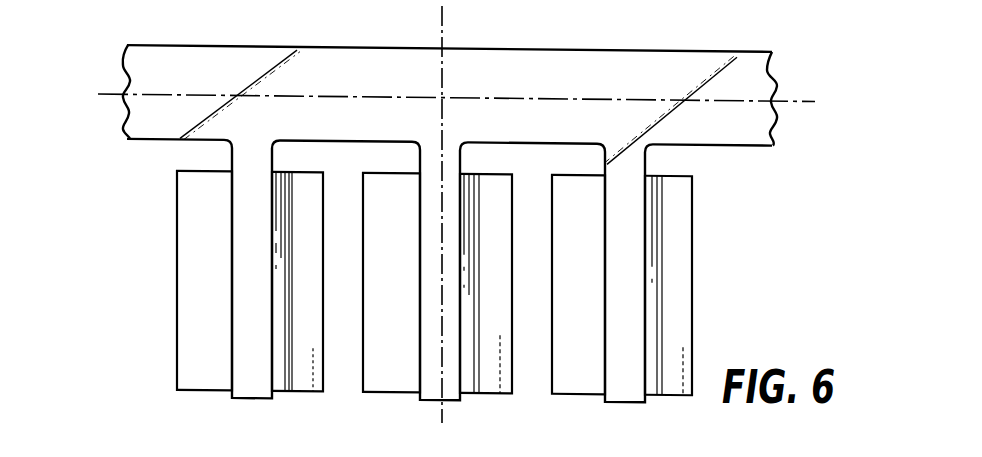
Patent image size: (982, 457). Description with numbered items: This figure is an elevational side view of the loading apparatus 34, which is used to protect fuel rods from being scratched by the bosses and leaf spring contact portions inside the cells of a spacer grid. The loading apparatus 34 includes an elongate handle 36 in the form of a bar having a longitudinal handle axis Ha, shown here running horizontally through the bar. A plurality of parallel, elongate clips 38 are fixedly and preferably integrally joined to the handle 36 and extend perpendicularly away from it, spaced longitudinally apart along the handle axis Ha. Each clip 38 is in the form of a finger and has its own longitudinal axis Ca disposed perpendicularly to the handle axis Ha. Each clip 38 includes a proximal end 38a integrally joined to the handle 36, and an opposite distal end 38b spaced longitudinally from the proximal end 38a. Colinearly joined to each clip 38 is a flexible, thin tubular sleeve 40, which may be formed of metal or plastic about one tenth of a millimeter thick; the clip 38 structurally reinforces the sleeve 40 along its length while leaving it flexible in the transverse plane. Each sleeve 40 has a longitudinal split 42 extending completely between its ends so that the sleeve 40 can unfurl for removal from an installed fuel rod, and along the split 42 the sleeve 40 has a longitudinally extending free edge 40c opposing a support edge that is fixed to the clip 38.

The loading apparatus 34 is at (603, 50).
The handle 36 is at (124, 117).
The clip 38 is at (417, 305).
The clip proximal end 38a is at (273, 153).
The clip distal end 38b is at (373, 393).
The sleeve 40 is at (558, 393).
The free edge 40c is at (662, 313).
The longitudinal split 42 is at (651, 395).
The clip longitudinal axis Ca is at (443, 22).
The handle longitudinal axis Ha is at (797, 100).